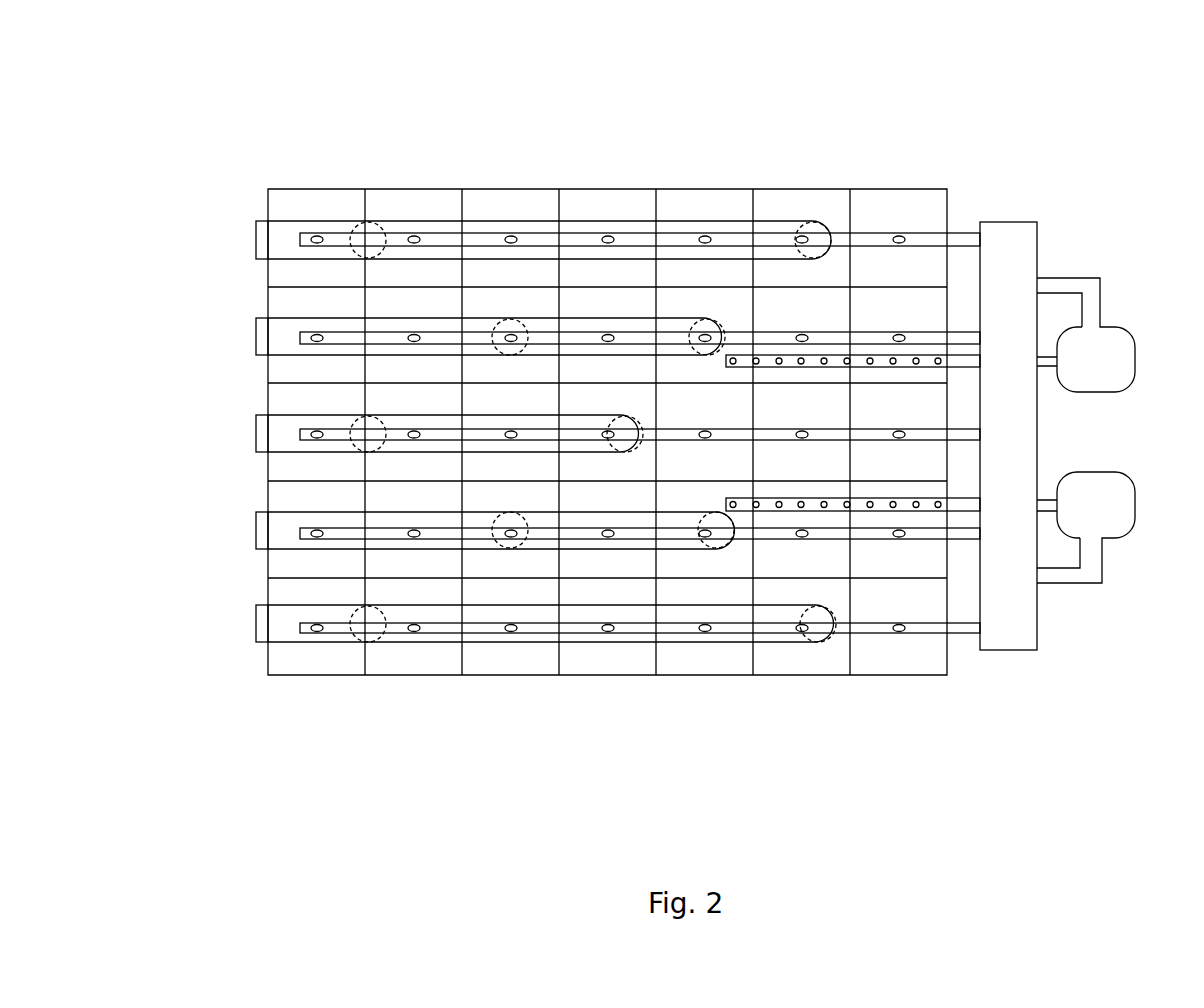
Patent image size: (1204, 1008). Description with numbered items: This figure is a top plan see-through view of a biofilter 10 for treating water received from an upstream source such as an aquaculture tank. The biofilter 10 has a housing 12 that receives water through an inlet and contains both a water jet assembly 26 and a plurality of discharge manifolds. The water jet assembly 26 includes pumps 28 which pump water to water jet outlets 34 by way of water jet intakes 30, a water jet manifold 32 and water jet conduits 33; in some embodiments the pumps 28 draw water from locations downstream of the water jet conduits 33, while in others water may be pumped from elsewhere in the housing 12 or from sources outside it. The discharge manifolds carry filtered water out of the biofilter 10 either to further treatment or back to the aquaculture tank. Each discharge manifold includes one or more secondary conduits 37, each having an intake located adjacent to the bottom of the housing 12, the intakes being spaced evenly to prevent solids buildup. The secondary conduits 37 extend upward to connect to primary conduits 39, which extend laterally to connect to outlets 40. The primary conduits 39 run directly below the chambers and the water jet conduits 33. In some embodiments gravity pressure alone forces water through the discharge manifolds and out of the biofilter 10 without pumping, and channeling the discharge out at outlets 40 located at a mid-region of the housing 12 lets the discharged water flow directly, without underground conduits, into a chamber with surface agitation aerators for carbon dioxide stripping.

The biofilter 10 is at (724, 111).
The housing 12 is at (495, 189).
The water jet assembly 26 is at (1100, 602).
The pumps 28 is at (1133, 337).
The water jet intakes 30 is at (923, 512).
The water jet manifold 32 is at (1008, 222).
The water jet conduits 33 is at (643, 233).
The water jet outlets 34 is at (898, 233).
The secondary conduits 37 is at (820, 642).
The primary conduits 39 is at (592, 642).
The outlets 40 is at (257, 622).